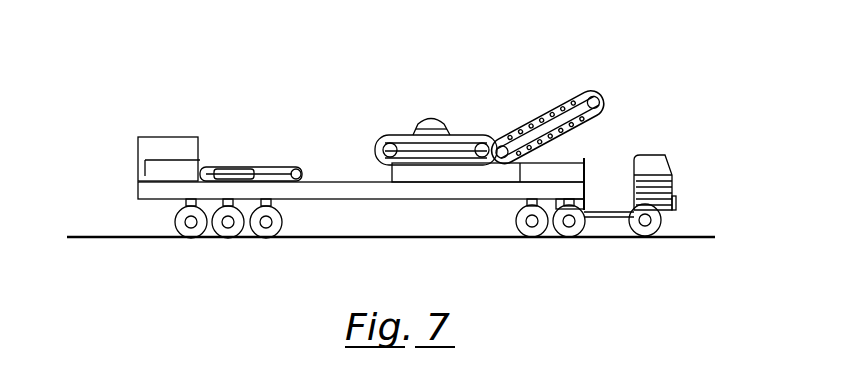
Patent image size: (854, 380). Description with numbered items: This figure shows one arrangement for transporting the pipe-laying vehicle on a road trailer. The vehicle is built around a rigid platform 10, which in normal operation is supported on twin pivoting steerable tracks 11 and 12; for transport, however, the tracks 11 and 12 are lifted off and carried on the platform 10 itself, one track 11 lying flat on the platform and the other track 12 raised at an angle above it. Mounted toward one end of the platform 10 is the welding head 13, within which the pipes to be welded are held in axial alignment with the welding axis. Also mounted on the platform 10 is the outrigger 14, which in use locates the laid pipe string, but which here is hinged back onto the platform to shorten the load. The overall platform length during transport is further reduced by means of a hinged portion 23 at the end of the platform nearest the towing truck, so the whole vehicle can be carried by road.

The rigid platform 10 is at (343, 182).
The pivoting steerable track 11 is at (403, 135).
The pivoting steerable track 12 is at (565, 100).
The welding head 13 is at (168, 138).
The outrigger 14 is at (257, 167).
The hinged portion 23 is at (592, 153).